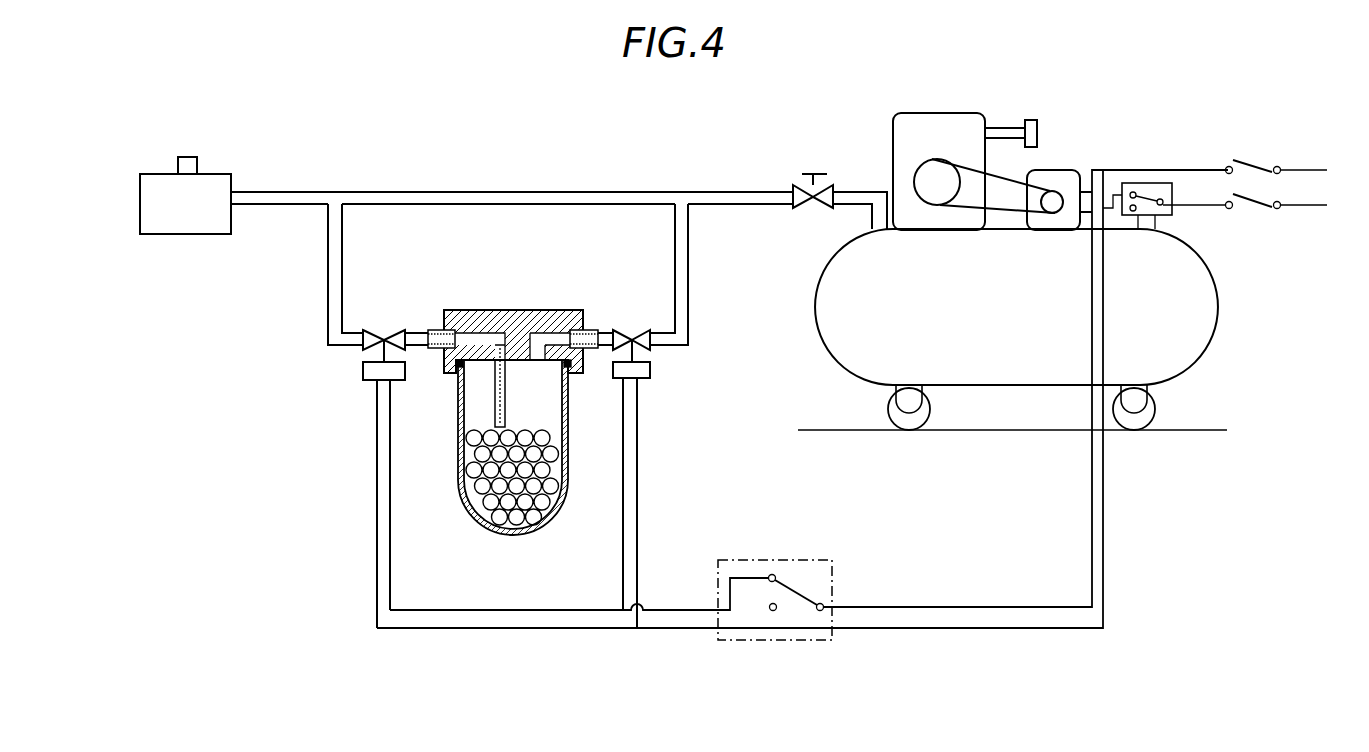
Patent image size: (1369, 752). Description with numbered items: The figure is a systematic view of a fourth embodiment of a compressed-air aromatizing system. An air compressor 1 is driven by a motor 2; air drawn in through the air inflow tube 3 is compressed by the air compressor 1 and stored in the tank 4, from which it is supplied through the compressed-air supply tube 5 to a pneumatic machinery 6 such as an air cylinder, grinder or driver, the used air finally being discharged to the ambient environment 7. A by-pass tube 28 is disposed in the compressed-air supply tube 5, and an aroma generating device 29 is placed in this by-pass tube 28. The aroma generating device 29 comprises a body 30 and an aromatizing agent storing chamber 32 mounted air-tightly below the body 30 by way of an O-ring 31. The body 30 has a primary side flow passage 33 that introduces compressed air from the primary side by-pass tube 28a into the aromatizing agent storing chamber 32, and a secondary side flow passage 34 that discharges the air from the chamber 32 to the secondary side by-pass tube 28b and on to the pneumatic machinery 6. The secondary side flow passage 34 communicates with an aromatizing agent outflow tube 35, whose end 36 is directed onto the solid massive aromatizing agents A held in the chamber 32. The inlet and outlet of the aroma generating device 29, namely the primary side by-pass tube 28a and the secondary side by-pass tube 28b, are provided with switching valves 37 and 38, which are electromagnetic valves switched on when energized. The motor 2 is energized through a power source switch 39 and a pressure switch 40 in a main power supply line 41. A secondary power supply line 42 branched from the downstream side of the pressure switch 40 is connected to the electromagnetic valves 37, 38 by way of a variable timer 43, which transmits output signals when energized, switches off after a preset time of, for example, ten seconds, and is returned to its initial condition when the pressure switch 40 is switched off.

The air compressor 1 is at (892, 150).
The motor 2 is at (1062, 170).
The air inflow tube 3 is at (1007, 125).
The tank 4 is at (1198, 318).
The compressed-air supply tube 5 is at (605, 192).
The pneumatic machinery 6 is at (208, 200).
The ambient environment 7 is at (178, 160).
The by-pass tube 28 is at (514, 378).
The primary side by-pass tube 28a is at (675, 289).
The secondary side by-pass tube 28b is at (343, 289).
The aroma generating device 29 is at (514, 402).
The body 30 is at (482, 318).
The O-ring 31 is at (573, 372).
The aromatizing agent storing chamber 32 is at (460, 493).
The primary side flow passage 33 is at (553, 338).
The secondary side flow passage 34 is at (477, 340).
The aromatizing agent outflow tube 35 is at (493, 387).
The end of the aromatizing agent outflow tube 36 is at (497, 423).
The switching valve 37 is at (628, 337).
The switching valve 38 is at (385, 334).
The power source switch 39 is at (1262, 147).
The pressure switch 40 is at (1175, 215).
The main power supply line 41 is at (1110, 170).
The secondary power supply line 42 is at (998, 602).
The variable timer 43 is at (832, 575).
The desiccant A is at (555, 480).